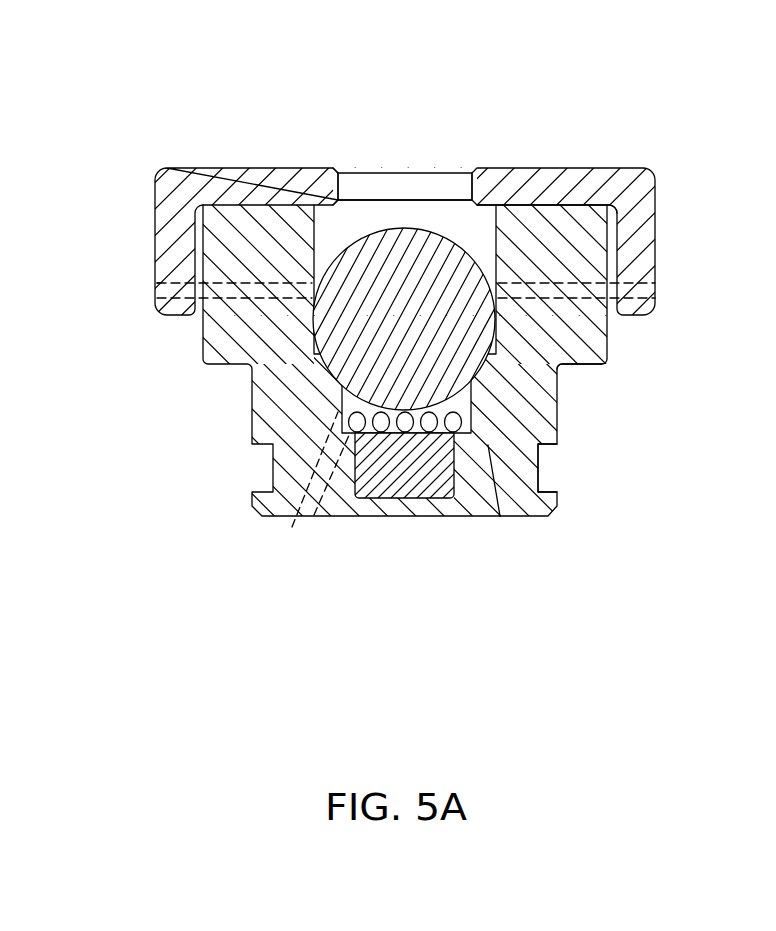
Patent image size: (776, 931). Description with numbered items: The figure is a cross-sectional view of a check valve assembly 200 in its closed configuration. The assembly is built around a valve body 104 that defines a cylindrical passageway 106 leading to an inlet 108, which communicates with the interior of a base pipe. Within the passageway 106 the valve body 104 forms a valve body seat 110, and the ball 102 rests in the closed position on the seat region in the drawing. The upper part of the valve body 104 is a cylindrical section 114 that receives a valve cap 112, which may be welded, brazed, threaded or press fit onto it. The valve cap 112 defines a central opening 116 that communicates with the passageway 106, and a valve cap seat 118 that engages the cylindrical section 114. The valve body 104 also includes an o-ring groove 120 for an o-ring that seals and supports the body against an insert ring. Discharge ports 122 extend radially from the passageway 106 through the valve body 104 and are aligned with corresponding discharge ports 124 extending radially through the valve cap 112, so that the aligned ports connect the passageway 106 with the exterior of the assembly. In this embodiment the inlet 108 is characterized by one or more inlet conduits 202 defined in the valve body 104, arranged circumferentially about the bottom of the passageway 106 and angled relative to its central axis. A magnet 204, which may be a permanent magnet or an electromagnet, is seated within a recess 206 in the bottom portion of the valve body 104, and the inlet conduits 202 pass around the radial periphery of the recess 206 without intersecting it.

The check valve assembly 200 is at (612, 88).
The ball 102 is at (352, 368).
The valve body 104 is at (213, 353).
The cylindrical passageway 106 is at (490, 215).
The inlet 108 is at (481, 442).
The valve body seat 110 is at (497, 377).
The valve cap 112 is at (655, 201).
The cylindrical section 114 is at (557, 217).
The central opening 116 is at (403, 168).
The valve cap seat 118 is at (323, 205).
The o-ring groove 120 is at (545, 469).
The discharge ports 122 is at (572, 300).
The discharge ports 124 is at (650, 290).
The inlet conduits 202 is at (293, 517).
The magnet 204 is at (343, 500).
The recess 206 is at (452, 474).